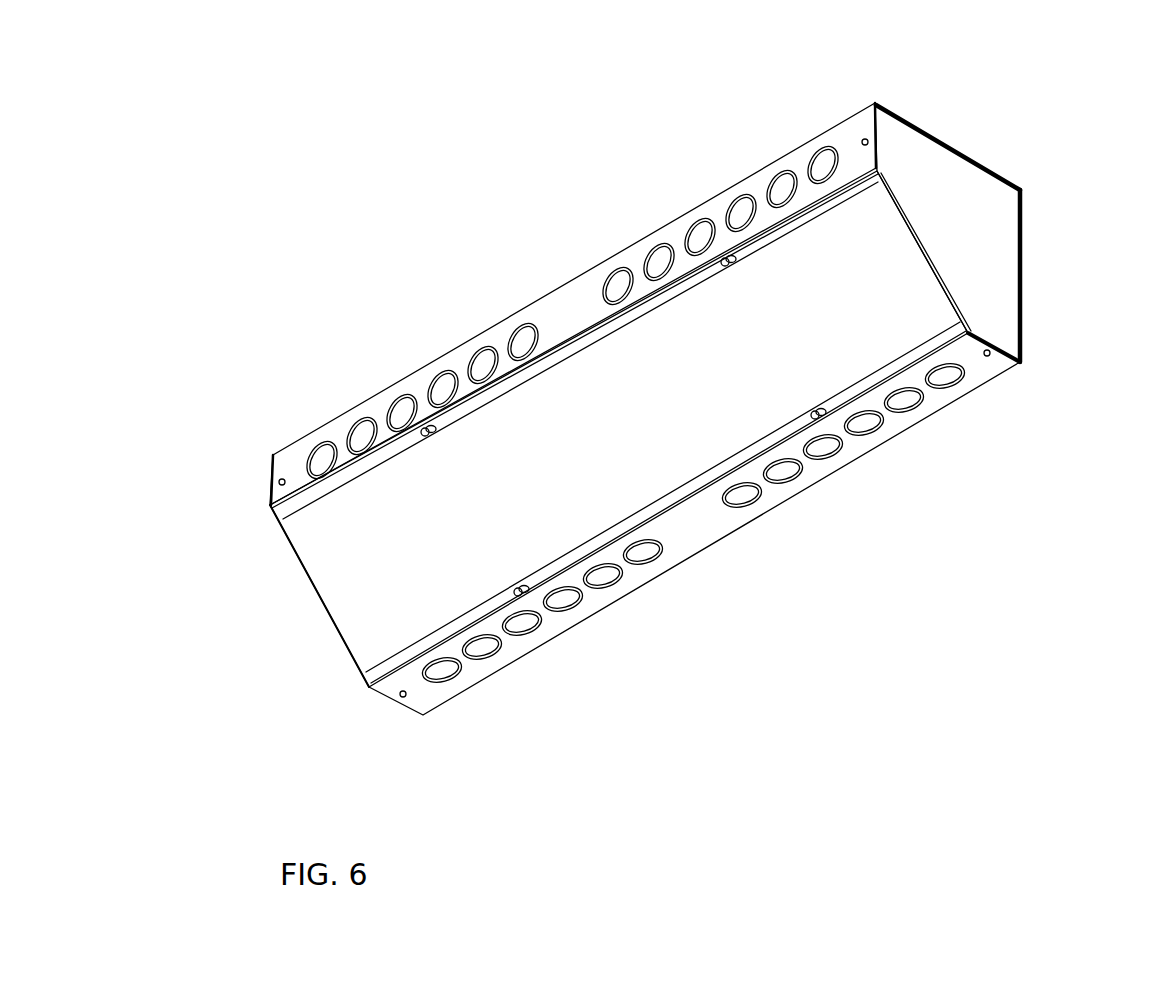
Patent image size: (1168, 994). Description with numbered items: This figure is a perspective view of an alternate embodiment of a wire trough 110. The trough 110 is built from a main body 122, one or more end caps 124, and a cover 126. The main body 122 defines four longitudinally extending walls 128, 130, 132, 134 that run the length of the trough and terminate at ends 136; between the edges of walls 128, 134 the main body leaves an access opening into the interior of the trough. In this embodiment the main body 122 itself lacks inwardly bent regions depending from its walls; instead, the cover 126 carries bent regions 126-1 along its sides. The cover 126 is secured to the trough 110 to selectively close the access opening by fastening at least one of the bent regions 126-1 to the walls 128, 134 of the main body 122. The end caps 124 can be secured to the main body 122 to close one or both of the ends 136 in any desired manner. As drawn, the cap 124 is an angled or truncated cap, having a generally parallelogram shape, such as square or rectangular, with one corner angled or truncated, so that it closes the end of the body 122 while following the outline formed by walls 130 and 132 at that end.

The trough 110 is at (270, 225).
The main body 122 is at (765, 165).
The end cap 124 is at (977, 217).
The cover 126 is at (335, 591).
The bent region 126-1 is at (292, 506).
The longitudinally extending wall 128 is at (566, 305).
The longitudinally extending wall 130 is at (970, 158).
The longitudinally extending wall 132 is at (1025, 272).
The longitudinally extending wall 134 is at (690, 532).
The end 136 is at (877, 101).